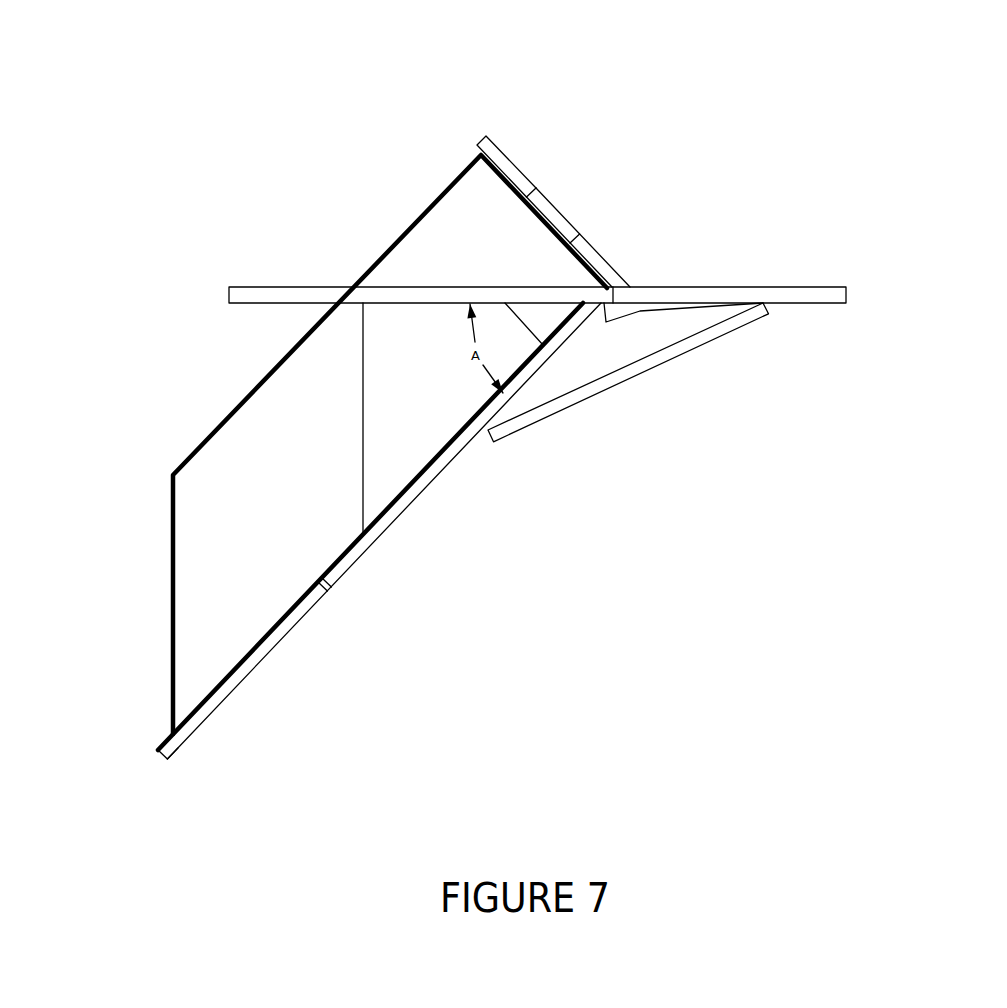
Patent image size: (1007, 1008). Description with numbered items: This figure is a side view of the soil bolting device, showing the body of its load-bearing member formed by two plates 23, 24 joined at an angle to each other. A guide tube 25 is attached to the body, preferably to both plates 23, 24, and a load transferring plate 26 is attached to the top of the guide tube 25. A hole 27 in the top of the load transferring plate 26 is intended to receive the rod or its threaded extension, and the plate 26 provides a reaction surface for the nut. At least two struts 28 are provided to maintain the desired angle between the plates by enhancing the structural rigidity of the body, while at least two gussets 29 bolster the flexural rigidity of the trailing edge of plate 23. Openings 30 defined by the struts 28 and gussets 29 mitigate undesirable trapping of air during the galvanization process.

The plate 23 is at (608, 240).
The plate 24 is at (246, 776).
The guide tube 25 is at (382, 416).
The load transferring plate 26 is at (605, 98).
The hole 27 is at (628, 194).
The strut 28 is at (385, 531).
The gusset 29 is at (640, 414).
The opening 30 is at (671, 250).